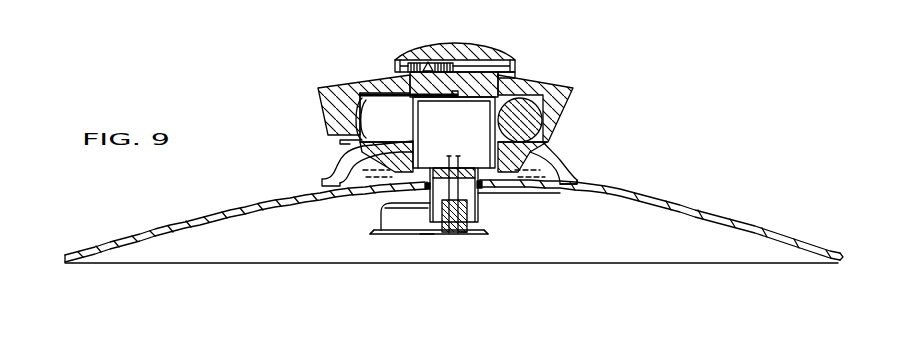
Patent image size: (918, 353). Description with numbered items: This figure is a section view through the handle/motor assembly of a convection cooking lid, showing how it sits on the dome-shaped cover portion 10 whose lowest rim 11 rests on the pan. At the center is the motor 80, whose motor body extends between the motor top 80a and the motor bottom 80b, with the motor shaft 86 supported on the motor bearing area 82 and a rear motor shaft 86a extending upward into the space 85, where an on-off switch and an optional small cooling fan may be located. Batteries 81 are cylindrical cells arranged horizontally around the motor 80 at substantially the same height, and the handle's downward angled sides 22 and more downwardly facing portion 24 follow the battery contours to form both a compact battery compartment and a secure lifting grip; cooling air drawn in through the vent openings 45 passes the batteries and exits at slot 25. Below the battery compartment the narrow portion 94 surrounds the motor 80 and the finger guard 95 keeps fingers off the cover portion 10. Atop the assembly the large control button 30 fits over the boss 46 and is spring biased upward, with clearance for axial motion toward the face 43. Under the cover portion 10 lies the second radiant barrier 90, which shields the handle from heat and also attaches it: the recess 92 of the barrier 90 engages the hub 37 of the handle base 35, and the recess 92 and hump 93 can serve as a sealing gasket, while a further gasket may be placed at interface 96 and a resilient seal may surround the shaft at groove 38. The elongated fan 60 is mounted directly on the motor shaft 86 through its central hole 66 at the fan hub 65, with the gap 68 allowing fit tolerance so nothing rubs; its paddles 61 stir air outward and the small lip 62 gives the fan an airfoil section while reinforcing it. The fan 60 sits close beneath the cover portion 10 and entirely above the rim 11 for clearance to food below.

The cover portion 10 is at (710, 207).
The rim 11 is at (837, 263).
The sides 22 is at (327, 120).
The downwardly facing portion 24 is at (350, 147).
The slot 25 is at (337, 141).
The control button 30 is at (472, 45).
The handle base 35 is at (540, 150).
The hub 37 is at (430, 210).
The groove 38 is at (460, 167).
The face 43 is at (512, 77).
The vent openings 45 is at (412, 67).
The boss 46 is at (507, 58).
The fan 60 is at (395, 233).
The paddles 61 is at (403, 213).
The lip 62 is at (487, 234).
The fan hub 65 is at (463, 234).
The central hole 66 is at (455, 234).
The gap 68 is at (427, 233).
The motor 80 is at (530, 110).
The motor top 80a is at (433, 100).
The motor bottom 80b is at (434, 168).
The batteries 81 is at (548, 122).
The motor bearing area 82 is at (530, 110).
The space 85 is at (473, 85).
The motor shaft 86 is at (477, 220).
The rear motor shaft 86a is at (428, 65).
The second radiant barrier 90 is at (548, 193).
The recess 92 is at (480, 202).
The hump 93 is at (480, 193).
The narrow portion 94 is at (545, 162).
The finger guard 95 is at (573, 178).
The interface 96 is at (388, 187).